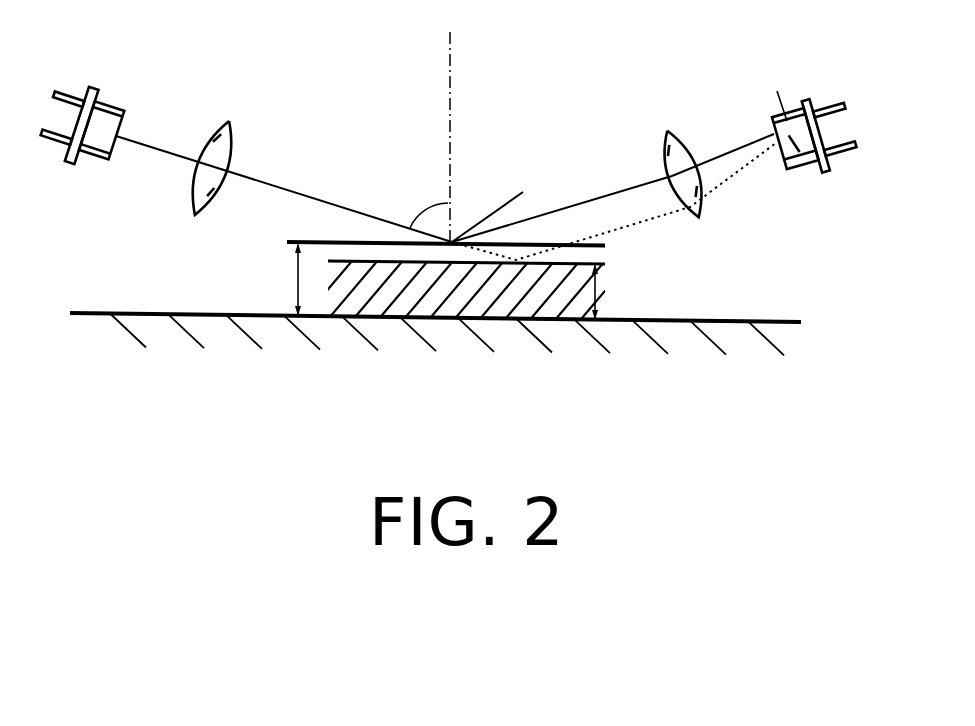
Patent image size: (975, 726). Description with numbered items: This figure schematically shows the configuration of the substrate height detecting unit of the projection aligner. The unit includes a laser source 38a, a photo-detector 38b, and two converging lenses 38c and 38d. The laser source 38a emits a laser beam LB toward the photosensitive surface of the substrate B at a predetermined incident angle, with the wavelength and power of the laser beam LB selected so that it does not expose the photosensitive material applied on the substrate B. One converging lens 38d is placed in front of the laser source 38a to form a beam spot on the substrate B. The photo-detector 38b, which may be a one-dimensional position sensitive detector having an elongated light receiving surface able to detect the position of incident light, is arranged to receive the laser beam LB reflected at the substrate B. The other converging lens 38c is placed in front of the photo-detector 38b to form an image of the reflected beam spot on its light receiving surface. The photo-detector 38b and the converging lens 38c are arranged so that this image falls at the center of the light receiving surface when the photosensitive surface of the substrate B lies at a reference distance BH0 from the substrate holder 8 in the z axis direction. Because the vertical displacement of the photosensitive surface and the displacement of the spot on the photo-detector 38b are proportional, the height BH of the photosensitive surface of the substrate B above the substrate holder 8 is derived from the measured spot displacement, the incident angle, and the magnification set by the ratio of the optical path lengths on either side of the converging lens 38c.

The laser source 38a is at (159, 91).
The photo-detector 38b is at (741, 87).
The converging lens 38c is at (667, 143).
The converging lens 38d is at (222, 144).
The substrate holder 8 is at (712, 334).
The substrate B is at (472, 293).
The laser beam LB is at (319, 203).
The reference distance BH0 is at (297, 275).
The height of photosensitive surface BH is at (600, 292).